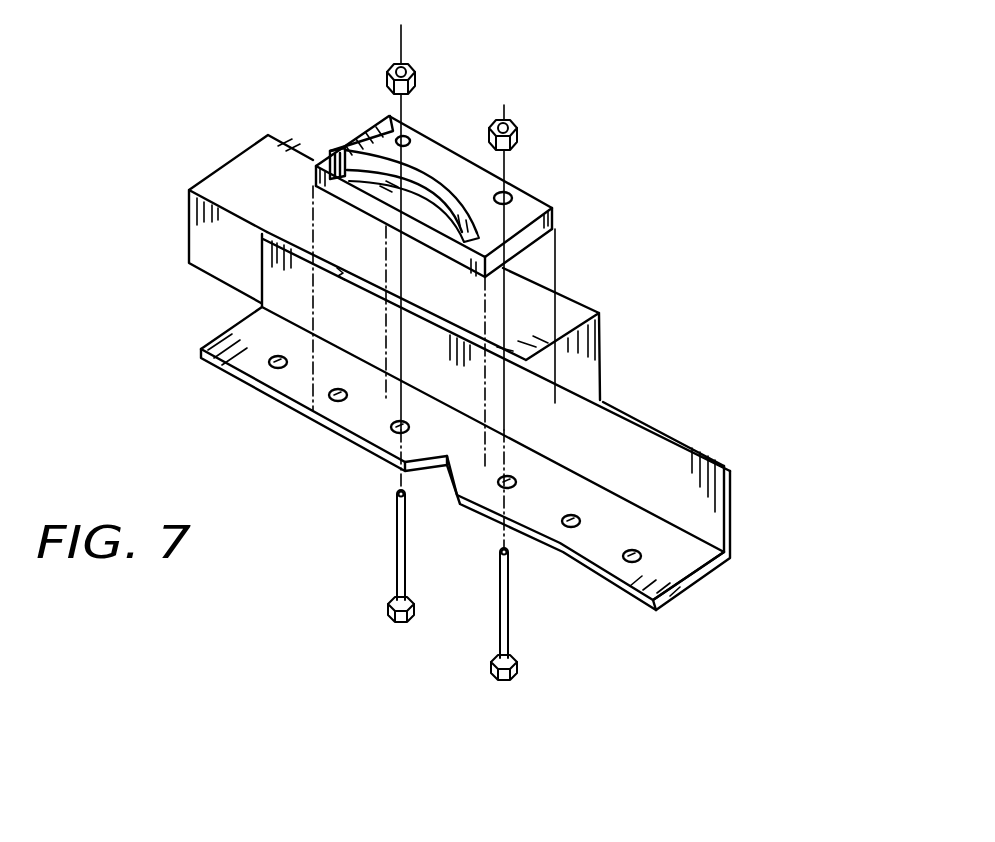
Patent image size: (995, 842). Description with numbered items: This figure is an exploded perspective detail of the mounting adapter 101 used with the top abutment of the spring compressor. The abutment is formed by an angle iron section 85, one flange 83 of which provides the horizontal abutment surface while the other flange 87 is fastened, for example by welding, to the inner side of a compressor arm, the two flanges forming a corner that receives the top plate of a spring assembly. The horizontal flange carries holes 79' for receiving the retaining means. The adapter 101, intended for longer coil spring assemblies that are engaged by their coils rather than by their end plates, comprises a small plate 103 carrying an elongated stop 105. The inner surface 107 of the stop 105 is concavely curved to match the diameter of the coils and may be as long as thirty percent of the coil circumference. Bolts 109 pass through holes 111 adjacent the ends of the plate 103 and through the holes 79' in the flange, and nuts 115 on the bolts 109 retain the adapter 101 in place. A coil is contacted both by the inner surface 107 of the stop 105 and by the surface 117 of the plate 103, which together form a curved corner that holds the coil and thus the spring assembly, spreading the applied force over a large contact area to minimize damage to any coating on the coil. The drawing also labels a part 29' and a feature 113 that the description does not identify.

The mounting adapter 101 is at (478, 178).
The small plate 103 is at (472, 178).
The elongated stop 105 is at (337, 149).
The inner surface 107 is at (378, 166).
The bolt 109 is at (498, 616).
The hole 111 is at (409, 136).
The underside of clamp plate 113 is at (514, 253).
The nut 115 is at (410, 66).
The surface of the plate 117 is at (396, 190).
The rail 29' is at (436, 267).
The flange 83 is at (436, 458).
The angle iron section 85 is at (486, 422).
The flange 87 is at (700, 453).
The holes 79' is at (448, 459).